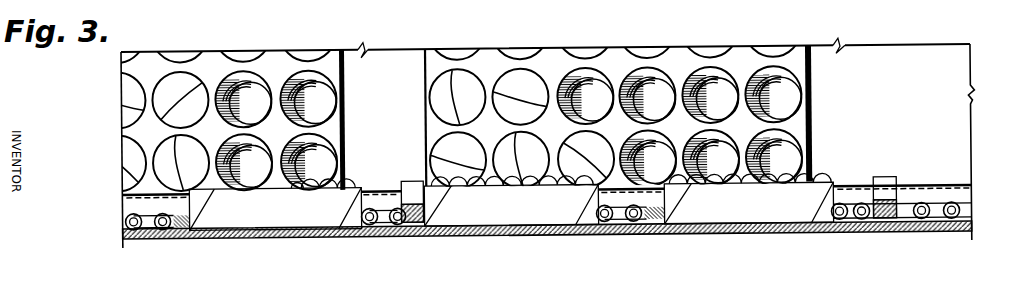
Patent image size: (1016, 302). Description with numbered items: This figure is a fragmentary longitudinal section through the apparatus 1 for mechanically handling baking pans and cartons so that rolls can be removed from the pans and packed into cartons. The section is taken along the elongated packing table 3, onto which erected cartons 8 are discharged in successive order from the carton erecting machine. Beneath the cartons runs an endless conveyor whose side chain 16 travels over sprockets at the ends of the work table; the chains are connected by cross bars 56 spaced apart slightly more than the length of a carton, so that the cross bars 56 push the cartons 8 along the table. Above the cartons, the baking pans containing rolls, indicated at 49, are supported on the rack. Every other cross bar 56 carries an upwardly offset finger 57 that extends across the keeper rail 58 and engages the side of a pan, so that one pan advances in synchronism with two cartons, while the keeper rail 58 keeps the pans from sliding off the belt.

The apparatus 1 is at (962, 47).
The packing table 3 is at (905, 238).
The carton 8 is at (340, 220).
The side chain 16 is at (122, 219).
The baking pan containing rolls 49 is at (425, 105).
The cross bar 56 is at (420, 226).
The finger 57 is at (412, 186).
The keeper rail 58 is at (940, 192).